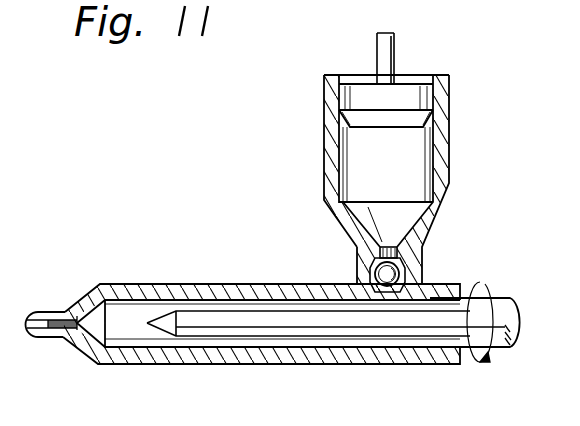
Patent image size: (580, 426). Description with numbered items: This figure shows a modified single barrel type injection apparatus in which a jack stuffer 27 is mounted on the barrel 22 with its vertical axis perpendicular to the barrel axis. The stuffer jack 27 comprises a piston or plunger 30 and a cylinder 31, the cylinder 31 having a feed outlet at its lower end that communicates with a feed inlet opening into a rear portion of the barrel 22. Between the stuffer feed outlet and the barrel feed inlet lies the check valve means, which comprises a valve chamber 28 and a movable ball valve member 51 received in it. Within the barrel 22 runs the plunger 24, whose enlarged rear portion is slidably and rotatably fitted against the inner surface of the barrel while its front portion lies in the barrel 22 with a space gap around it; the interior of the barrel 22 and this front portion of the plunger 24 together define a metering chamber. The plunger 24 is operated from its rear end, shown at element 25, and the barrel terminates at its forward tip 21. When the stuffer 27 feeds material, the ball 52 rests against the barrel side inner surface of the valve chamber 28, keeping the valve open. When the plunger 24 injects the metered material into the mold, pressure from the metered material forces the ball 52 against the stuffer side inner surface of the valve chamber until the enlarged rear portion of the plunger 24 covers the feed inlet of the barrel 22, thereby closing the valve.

The nose tip 21 is at (34, 312).
The barrel 22 is at (190, 284).
The plunger 24 is at (243, 318).
The plunger 25 is at (508, 366).
The stuffer 27 is at (323, 154).
The valve chamber 28 is at (355, 258).
The piston or plunger 30 is at (405, 96).
The cylinder 31 is at (450, 150).
The ball valve member 51 is at (418, 266).
The ball 52 is at (393, 246).